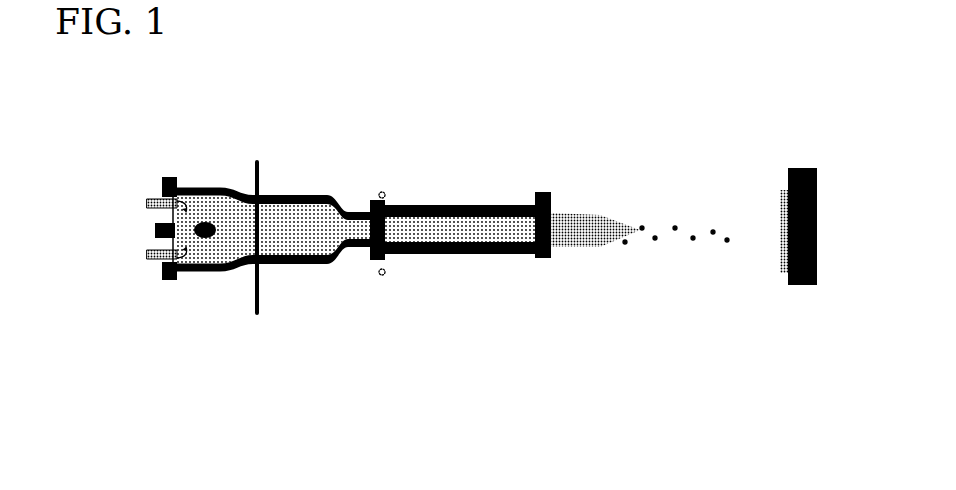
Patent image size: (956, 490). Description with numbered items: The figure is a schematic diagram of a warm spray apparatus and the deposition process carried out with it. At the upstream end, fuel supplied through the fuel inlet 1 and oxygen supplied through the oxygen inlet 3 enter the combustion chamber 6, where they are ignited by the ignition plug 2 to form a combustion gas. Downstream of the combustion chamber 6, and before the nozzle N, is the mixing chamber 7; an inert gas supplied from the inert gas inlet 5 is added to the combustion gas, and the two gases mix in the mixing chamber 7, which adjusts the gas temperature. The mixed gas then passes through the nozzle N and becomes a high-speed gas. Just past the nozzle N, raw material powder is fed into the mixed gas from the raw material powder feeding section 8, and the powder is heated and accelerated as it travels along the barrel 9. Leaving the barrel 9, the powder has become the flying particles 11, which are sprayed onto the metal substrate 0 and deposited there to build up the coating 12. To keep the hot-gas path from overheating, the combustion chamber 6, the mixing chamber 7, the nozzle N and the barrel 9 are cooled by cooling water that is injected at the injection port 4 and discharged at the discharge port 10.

The fuel inlet 1 is at (147, 203).
The ignition plug 2 is at (155, 230).
The oxygen inlet 3 is at (147, 254).
The injection port 4 is at (170, 176).
The inert gas inlet 5 is at (258, 160).
The combustion chamber 6 is at (162, 288).
The mixing chamber 7 is at (323, 288).
The raw material powder feeding section 8 is at (382, 189).
The barrel 9 is at (382, 290).
The discharge port 10 is at (542, 192).
The flying particles 11 is at (673, 226).
The coating 12 is at (780, 197).
The nozzle N is at (352, 214).
The metal substrate 0 is at (800, 276).